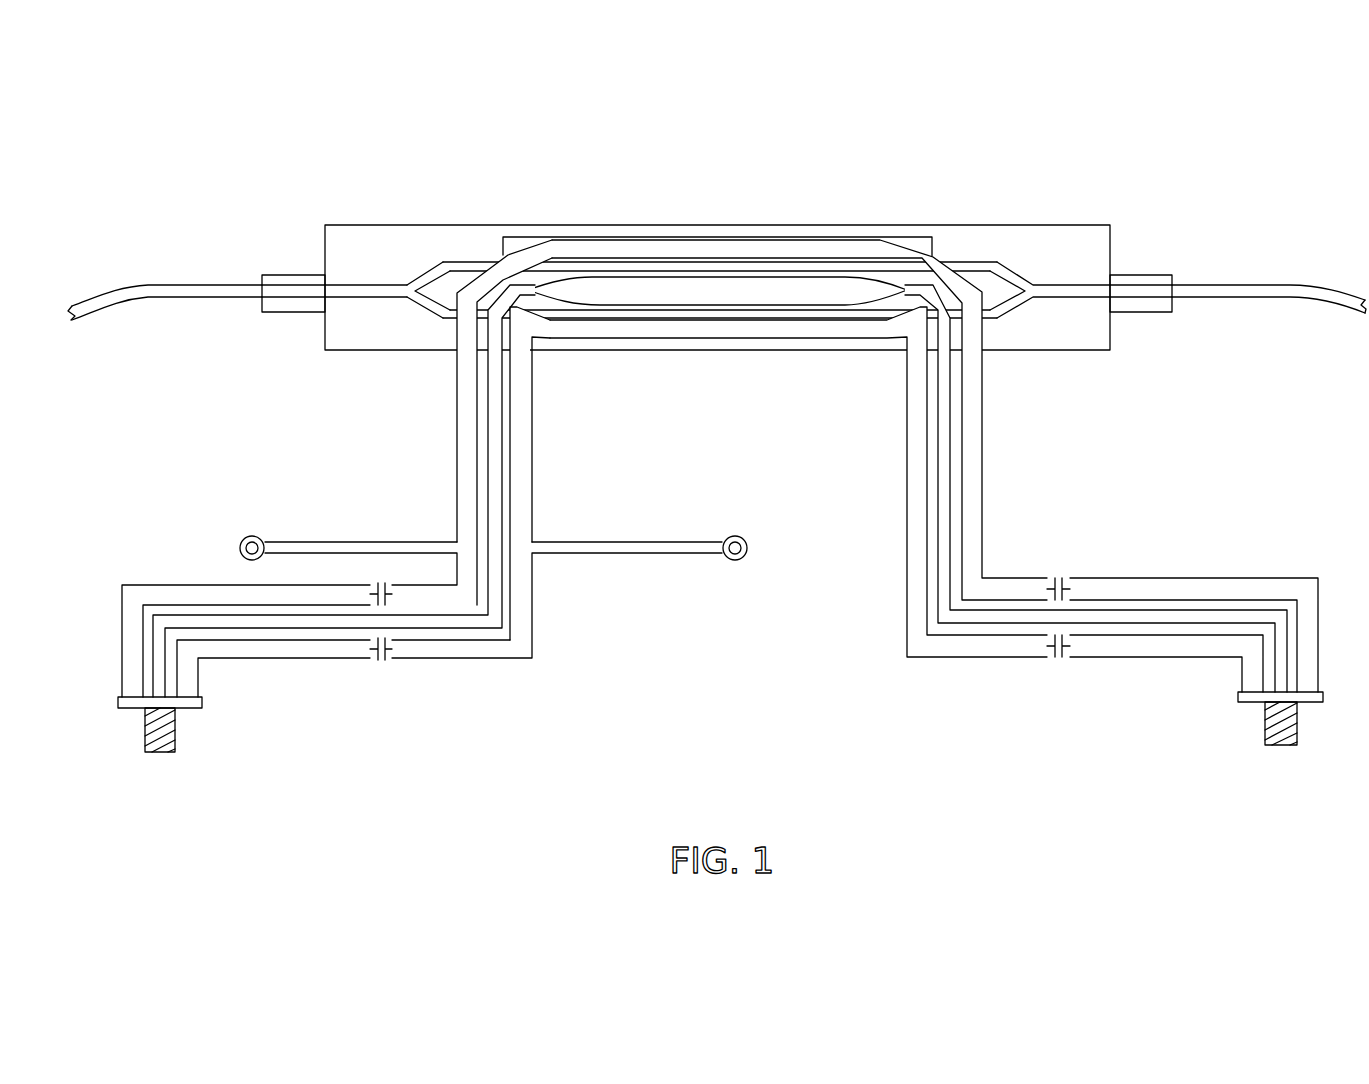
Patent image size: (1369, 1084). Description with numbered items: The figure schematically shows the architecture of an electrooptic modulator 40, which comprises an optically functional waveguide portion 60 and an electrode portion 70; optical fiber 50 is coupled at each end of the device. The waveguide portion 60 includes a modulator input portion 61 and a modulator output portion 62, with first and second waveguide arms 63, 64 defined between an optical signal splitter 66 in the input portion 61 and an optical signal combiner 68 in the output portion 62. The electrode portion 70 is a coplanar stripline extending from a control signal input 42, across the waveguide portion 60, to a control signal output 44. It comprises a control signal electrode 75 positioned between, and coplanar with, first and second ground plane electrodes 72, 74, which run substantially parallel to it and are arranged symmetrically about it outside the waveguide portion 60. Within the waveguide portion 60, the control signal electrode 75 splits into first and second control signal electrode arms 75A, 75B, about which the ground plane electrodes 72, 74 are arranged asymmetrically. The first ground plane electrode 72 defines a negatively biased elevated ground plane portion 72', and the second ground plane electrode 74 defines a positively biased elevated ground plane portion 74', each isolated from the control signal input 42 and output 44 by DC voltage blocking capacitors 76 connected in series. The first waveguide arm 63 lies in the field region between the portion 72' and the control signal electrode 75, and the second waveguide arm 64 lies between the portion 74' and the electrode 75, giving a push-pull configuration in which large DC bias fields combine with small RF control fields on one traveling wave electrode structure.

The modulator 40 is at (379, 135).
The control signal input 42 is at (178, 730).
The control signal output 44 is at (1298, 722).
The optical fiber 50 is at (136, 312).
The optically functional waveguide portion 60 is at (918, 209).
The modulator input portion 61 is at (292, 275).
The modulator output portion 62 is at (1142, 275).
The first waveguide arm 63 is at (448, 262).
The second waveguide arm 64 is at (412, 310).
The optical signal splitter 66 is at (402, 286).
The optical signal combiner 68 is at (1030, 294).
The electrode portion 70 is at (1133, 452).
The first ground plane electrode 72 is at (694, 468).
The -Vbias elevated ground plane portion 72' is at (475, 422).
The second ground plane electrode 74 is at (720, 506).
The +Vbias elevated ground plane portion 74' is at (549, 473).
The control signal electrode 75 is at (496, 612).
The first control signal electrode arm 75A is at (572, 276).
The second control signal electrode arm 75B is at (864, 312).
The DC voltage blocking capacitor 76 is at (378, 582).